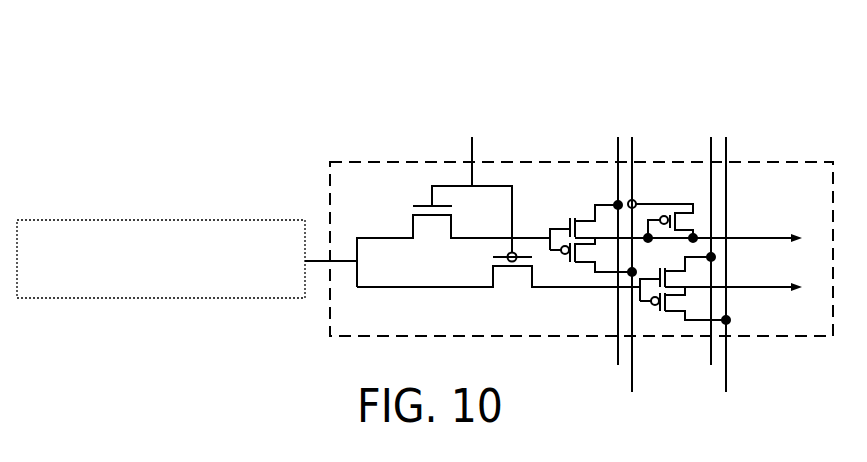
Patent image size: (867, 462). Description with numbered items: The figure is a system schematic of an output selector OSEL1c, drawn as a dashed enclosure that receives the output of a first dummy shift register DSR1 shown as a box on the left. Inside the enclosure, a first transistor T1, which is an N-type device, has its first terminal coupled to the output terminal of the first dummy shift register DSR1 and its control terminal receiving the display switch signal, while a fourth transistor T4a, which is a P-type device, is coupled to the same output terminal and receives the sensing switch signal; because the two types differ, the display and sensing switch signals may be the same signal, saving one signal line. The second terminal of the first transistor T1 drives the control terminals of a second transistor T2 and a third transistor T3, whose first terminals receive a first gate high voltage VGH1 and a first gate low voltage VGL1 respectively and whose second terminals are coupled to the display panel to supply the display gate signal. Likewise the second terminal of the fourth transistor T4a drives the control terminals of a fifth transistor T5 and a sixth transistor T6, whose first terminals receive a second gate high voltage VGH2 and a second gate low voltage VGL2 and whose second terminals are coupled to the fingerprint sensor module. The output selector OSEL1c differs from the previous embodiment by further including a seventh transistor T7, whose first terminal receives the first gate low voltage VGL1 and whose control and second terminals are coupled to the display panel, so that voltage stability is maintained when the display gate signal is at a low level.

The first dummy shift register DSR1 is at (187, 259).
The output selector OSEL1c is at (671, 163).
The first transistor T1 is at (453, 236).
The second transistor T2 is at (586, 225).
The third transistor T3 is at (593, 257).
The fourth transistor T4a is at (498, 283).
The fifth transistor T5 is at (677, 277).
The sixth transistor T6 is at (685, 305).
The seventh transistor T7 is at (663, 210).
The first gate high voltage VGH1 is at (585, 253).
The first gate low voltage VGL1 is at (600, 266).
The second gate high voltage VGH2 is at (678, 253).
The second gate low voltage VGL2 is at (695, 266).